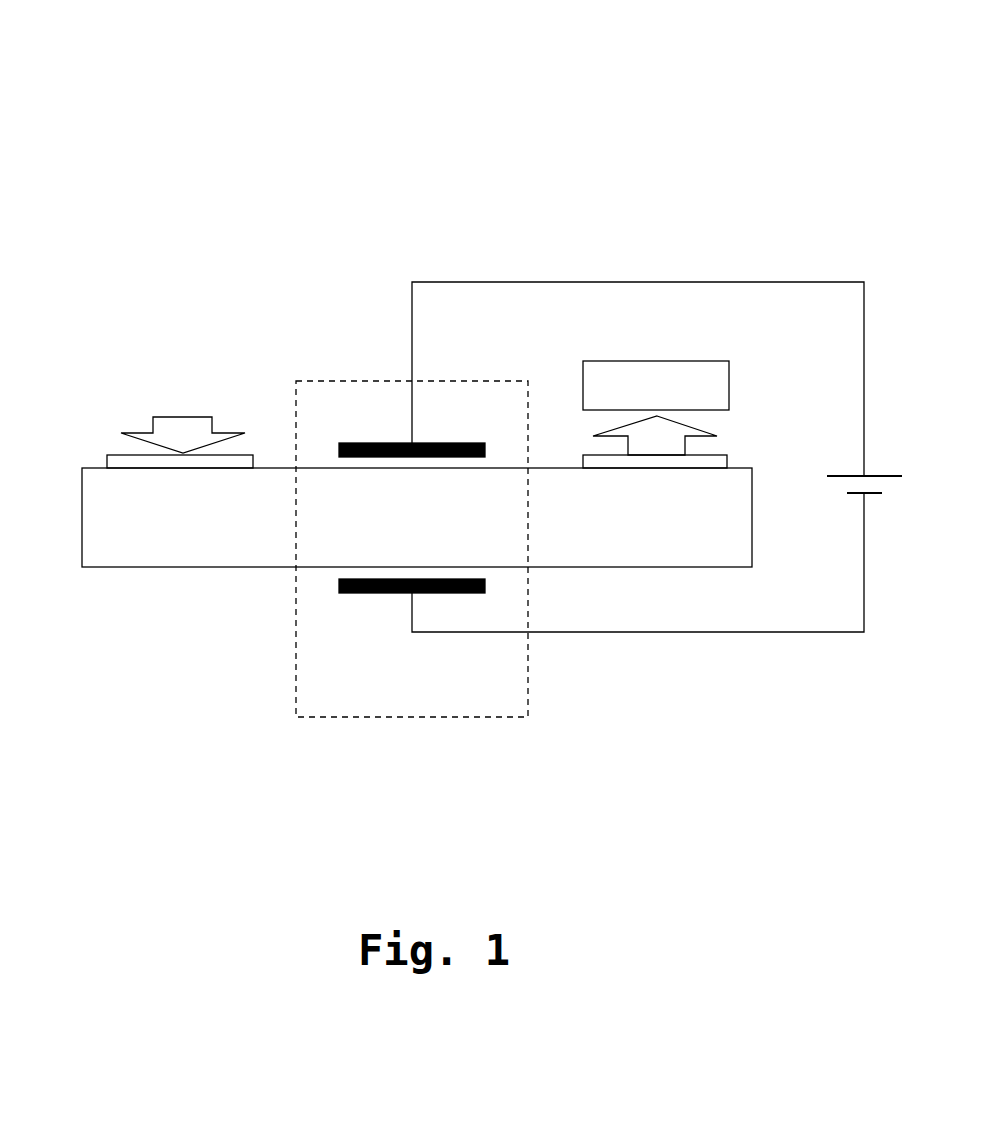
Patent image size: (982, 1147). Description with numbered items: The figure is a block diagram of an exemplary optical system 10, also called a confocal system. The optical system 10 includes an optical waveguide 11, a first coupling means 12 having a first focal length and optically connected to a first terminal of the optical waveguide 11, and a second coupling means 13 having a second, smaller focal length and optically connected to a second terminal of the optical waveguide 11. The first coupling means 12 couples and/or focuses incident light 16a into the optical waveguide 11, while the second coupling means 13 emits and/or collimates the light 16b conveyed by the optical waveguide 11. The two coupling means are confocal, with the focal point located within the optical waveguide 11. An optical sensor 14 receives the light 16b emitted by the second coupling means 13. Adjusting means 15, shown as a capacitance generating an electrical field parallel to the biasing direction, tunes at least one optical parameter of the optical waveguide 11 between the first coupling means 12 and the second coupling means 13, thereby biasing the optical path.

The optical system 10 is at (166, 67).
The optical waveguide 11 is at (84, 493).
The first coupling means 12 is at (108, 455).
The second coupling means 13 is at (727, 455).
The optical sensor 14 is at (729, 364).
The adjusting means 15 is at (295, 392).
The incident light 16a is at (155, 418).
The light 16b is at (606, 435).